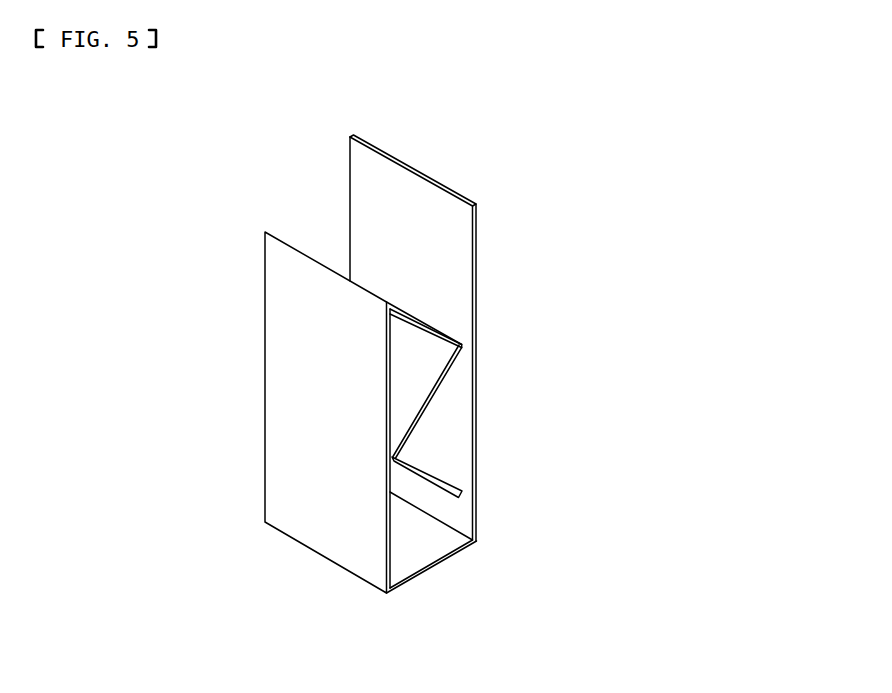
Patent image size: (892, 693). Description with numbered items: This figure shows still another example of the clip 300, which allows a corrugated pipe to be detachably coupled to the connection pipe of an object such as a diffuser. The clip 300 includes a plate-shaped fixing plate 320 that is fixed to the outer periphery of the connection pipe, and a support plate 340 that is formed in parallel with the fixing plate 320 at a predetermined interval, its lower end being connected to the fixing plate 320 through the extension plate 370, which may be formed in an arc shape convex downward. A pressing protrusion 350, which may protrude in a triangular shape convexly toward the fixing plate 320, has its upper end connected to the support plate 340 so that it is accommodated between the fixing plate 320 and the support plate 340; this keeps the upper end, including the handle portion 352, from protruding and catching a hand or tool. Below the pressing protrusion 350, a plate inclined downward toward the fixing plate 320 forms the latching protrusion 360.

The clip 300 is at (522, 168).
The fixing plate 320 is at (477, 272).
The support plate 340 is at (300, 392).
The pressing protrusion 350 is at (462, 344).
The handle portion 352 is at (437, 329).
The latching protrusion 360 is at (442, 480).
The extension plate 370 is at (447, 557).